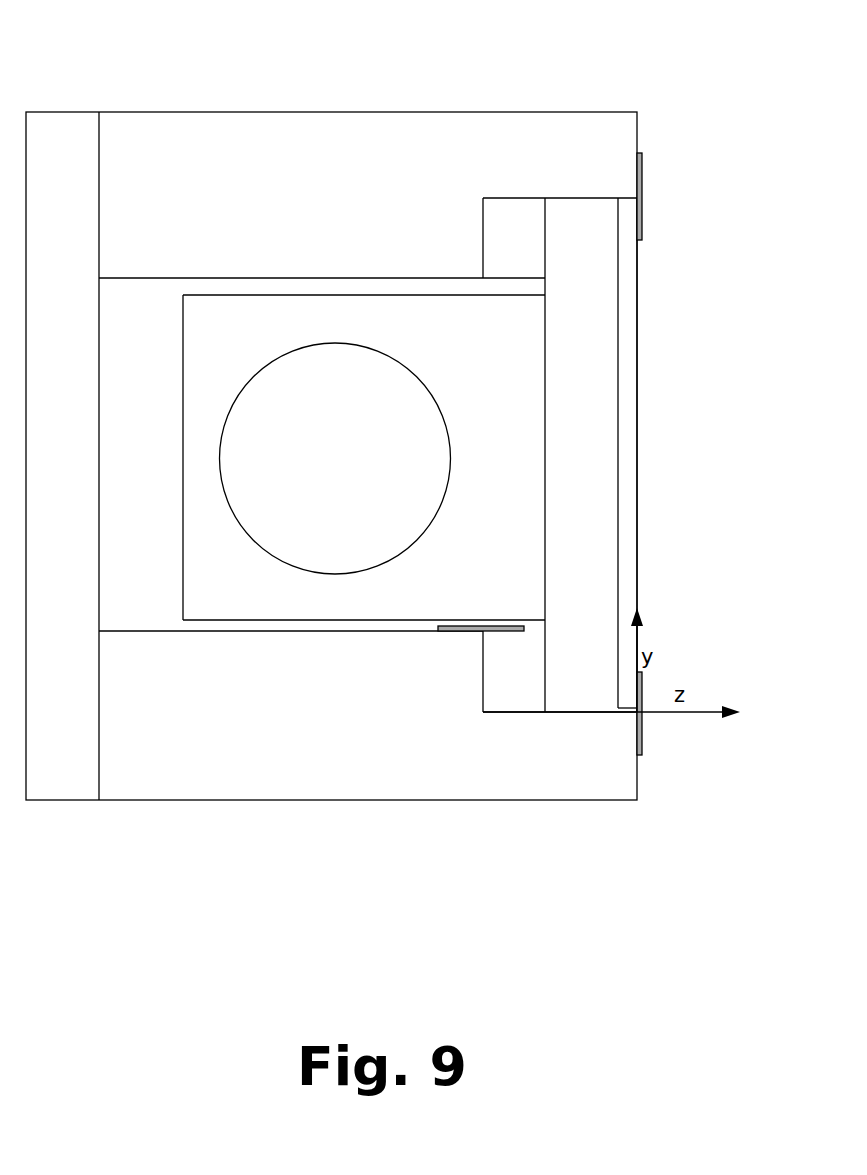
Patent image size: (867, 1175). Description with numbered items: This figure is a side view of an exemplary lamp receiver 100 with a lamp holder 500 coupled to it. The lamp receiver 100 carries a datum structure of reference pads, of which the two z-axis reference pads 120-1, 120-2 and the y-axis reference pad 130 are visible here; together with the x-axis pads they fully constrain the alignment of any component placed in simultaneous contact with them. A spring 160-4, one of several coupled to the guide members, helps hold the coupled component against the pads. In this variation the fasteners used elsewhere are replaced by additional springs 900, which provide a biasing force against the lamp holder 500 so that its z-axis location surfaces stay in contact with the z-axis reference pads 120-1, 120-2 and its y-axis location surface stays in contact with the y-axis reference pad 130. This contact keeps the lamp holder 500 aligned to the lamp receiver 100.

The lamp receiver 100 is at (219, 104).
The z-axis reference pad 120-1 is at (474, 676).
The z-axis reference pad 120-2 is at (474, 236).
The y-axis reference pad 130 is at (513, 722).
The spring 160-4 is at (480, 628).
The lamp holder 500 is at (648, 455).
The spring 900 is at (642, 198).